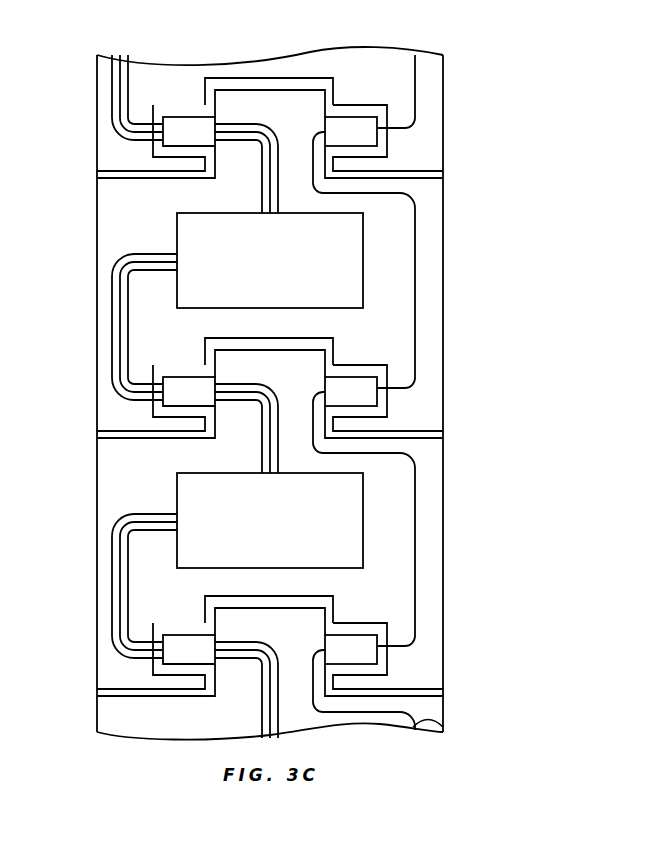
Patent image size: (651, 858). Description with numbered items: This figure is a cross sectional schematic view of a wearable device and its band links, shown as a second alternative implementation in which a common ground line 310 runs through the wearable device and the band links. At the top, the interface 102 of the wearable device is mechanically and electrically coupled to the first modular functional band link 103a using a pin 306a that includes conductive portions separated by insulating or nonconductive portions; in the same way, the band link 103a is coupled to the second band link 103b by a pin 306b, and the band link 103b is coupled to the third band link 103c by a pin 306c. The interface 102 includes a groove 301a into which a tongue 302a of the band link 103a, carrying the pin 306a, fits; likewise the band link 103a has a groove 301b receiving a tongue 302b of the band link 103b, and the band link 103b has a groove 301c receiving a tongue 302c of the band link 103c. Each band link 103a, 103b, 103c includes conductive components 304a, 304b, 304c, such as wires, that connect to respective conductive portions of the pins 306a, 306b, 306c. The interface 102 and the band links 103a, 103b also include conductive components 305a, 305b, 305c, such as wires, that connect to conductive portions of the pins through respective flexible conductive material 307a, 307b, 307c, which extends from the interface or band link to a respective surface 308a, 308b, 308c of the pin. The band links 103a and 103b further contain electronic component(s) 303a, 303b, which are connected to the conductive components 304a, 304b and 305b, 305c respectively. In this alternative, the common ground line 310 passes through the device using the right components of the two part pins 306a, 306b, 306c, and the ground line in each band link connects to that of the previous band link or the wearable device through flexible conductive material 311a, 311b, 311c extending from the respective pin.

The interface 102 is at (443, 157).
The modular functional band link 103a is at (443, 307).
The modular functional band link 103b is at (443, 563).
The modular functional band link 103c is at (443, 710).
The common ground line 310 is at (415, 77).
The groove 301a is at (333, 83).
The groove 301b is at (333, 340).
The groove 301c is at (333, 600).
The tongue 302a is at (228, 88).
The tongue 302b is at (270, 348).
The tongue 302c is at (270, 607).
The electronic component(s) 303a is at (363, 262).
The electronic component(s) 303b is at (363, 516).
The conductive component 304a is at (263, 202).
The conductive component 304b is at (263, 460).
The conductive component 304c is at (263, 713).
The conductive component 305a is at (143, 120).
The conductive component 305b is at (145, 252).
The conductive component 305c is at (145, 513).
The pin 306a is at (377, 137).
The pin 306b is at (377, 394).
The pin 306c is at (377, 655).
The flexible conductive material 307a is at (160, 143).
The flexible conductive material 307b is at (160, 402).
The flexible conductive material 307c is at (160, 661).
The surface of the pin 308a is at (160, 146).
The surface of the pin 308b is at (160, 405).
The surface of the pin 308c is at (160, 664).
The flexible conductive material 311a is at (380, 128).
The flexible conductive material 311b is at (380, 386).
The flexible conductive material 311c is at (380, 645).